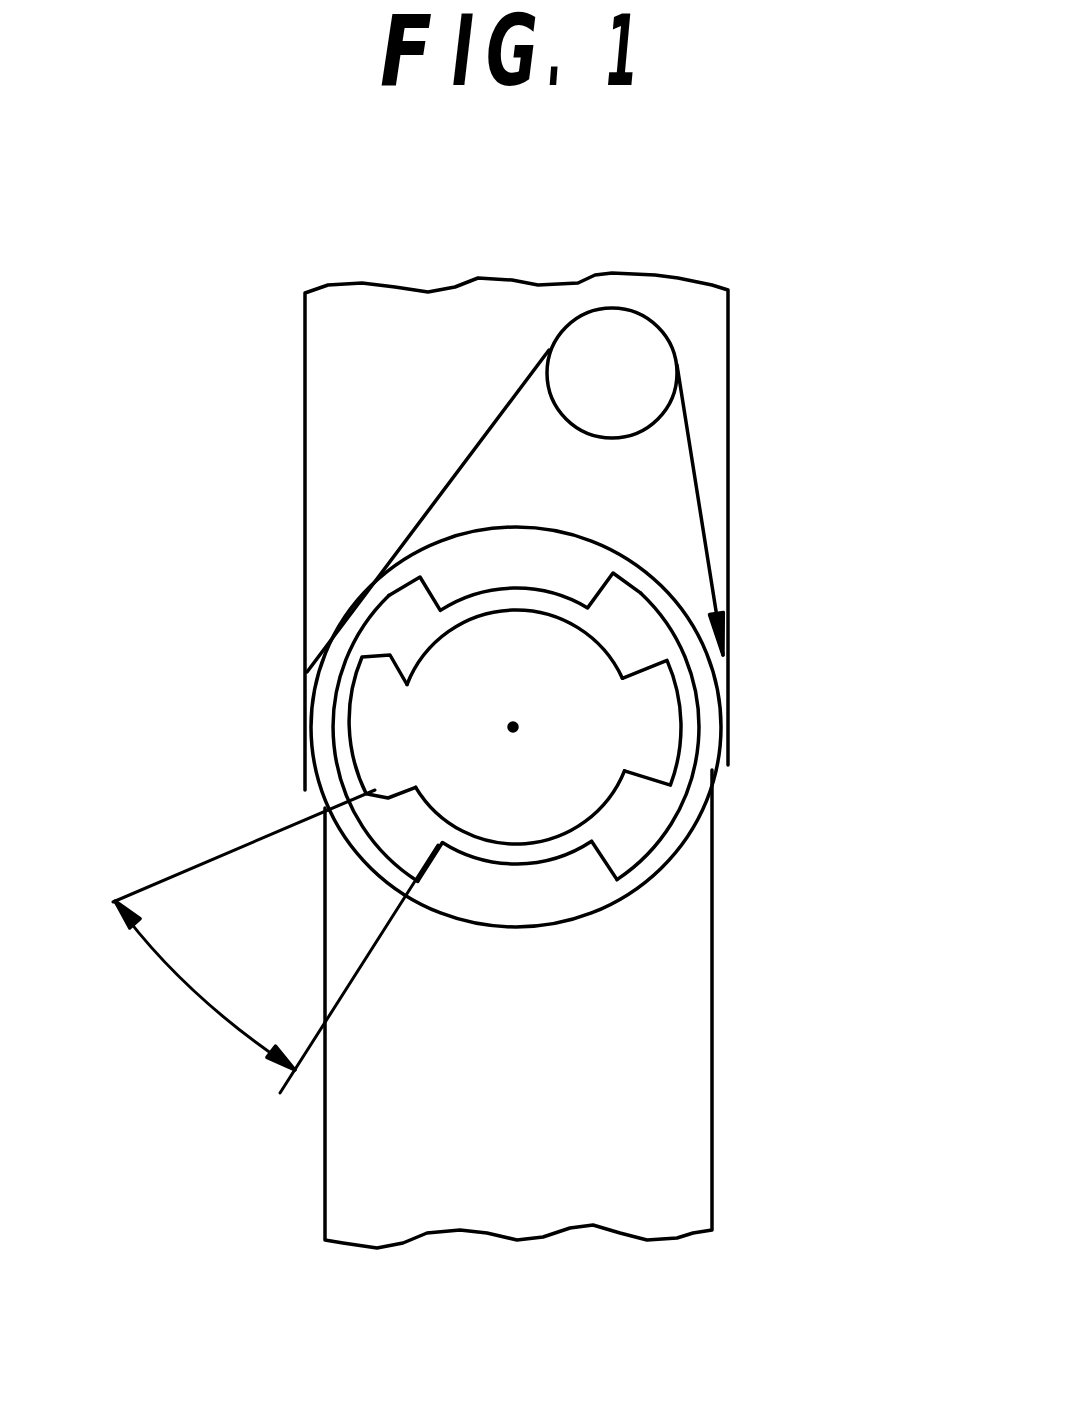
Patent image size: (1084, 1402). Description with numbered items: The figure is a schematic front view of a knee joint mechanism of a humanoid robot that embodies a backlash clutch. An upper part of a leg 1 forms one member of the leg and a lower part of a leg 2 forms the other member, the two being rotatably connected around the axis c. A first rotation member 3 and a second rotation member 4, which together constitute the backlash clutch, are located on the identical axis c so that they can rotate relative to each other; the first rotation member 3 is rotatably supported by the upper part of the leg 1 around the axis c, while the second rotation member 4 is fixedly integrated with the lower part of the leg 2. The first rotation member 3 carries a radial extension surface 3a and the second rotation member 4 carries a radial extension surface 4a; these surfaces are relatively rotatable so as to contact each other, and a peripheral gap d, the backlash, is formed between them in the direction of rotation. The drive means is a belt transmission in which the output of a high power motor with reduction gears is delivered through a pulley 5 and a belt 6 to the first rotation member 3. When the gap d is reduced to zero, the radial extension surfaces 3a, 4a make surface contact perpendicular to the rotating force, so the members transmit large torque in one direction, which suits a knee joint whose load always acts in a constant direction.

The upper part of a leg 1 is at (728, 488).
The lower part of a leg 2 is at (712, 1083).
The first rotation member 3 is at (462, 559).
The radial extension surface 3a is at (390, 600).
The second rotation member 4 is at (358, 727).
The radial extension surface 4a is at (362, 657).
The pulley 5 is at (615, 370).
The belt 6 is at (705, 563).
The axis c is at (518, 727).
The peripheral gap d is at (275, 941).